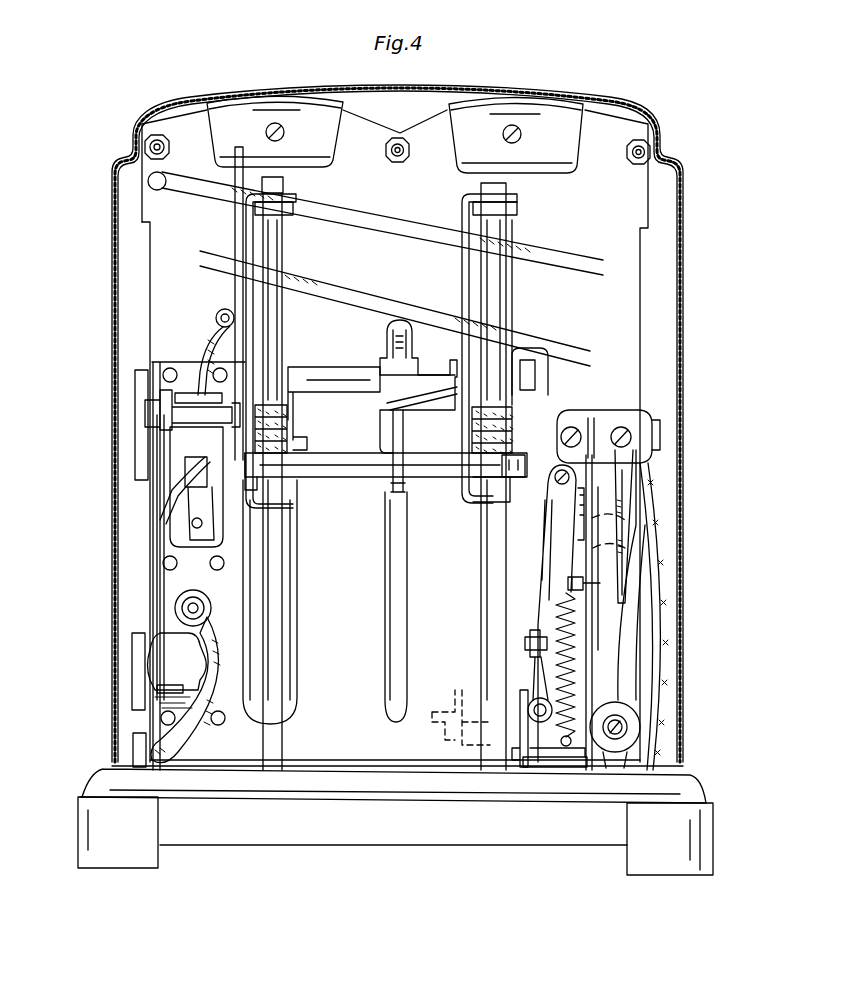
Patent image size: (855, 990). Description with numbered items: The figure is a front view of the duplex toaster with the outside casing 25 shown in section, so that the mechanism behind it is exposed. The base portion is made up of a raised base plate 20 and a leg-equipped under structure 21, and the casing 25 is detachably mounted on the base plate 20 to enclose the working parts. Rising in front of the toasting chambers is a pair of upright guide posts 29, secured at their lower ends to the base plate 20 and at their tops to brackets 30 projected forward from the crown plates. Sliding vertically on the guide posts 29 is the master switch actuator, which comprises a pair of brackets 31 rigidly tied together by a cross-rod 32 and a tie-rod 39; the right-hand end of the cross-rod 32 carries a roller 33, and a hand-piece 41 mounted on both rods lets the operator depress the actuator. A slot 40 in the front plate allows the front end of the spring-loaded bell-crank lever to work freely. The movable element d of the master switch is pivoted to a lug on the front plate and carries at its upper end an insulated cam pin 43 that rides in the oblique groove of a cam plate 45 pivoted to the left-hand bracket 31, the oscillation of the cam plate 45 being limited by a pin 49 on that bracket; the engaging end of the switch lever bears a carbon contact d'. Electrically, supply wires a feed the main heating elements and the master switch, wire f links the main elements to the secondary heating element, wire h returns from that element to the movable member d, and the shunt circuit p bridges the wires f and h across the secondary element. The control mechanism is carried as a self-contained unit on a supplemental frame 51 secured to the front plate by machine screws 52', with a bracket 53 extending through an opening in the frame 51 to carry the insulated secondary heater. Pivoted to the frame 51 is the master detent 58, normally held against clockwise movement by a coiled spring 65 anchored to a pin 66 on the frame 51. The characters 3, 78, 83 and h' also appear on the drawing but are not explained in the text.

The dial housing 3 is at (275, 131).
The brackets 30 is at (562, 150).
The casing 25 is at (112, 333).
The cam plate 45 is at (235, 228).
The brackets 31 is at (246, 253).
The guide posts 29 is at (283, 252).
The pin 49 is at (216, 318).
The wire f is at (602, 248).
The wire h is at (395, 308).
The tie-rod 39 is at (338, 375).
The hand-piece 41 is at (433, 384).
The roller 33 is at (520, 445).
The machine screws 52' is at (608, 421).
The cam pin 43 is at (170, 430).
The cross-rod 32 is at (333, 480).
The lever 83 is at (563, 493).
The supplemental frame 51 is at (583, 540).
The strip h' is at (136, 507).
The pin 66 is at (573, 583).
The coiled spring 65 is at (572, 610).
The movable element of master switch d is at (115, 557).
The bracket 53 is at (617, 640).
The slot 40 is at (385, 652).
The shunt circuit p is at (657, 670).
The pivot 78 is at (627, 722).
The carbon contact d' is at (134, 683).
The lead or supply wires a is at (198, 748).
The base plate 20 is at (370, 790).
The under structure 21 is at (125, 860).
The master detent 58 is at (545, 765).